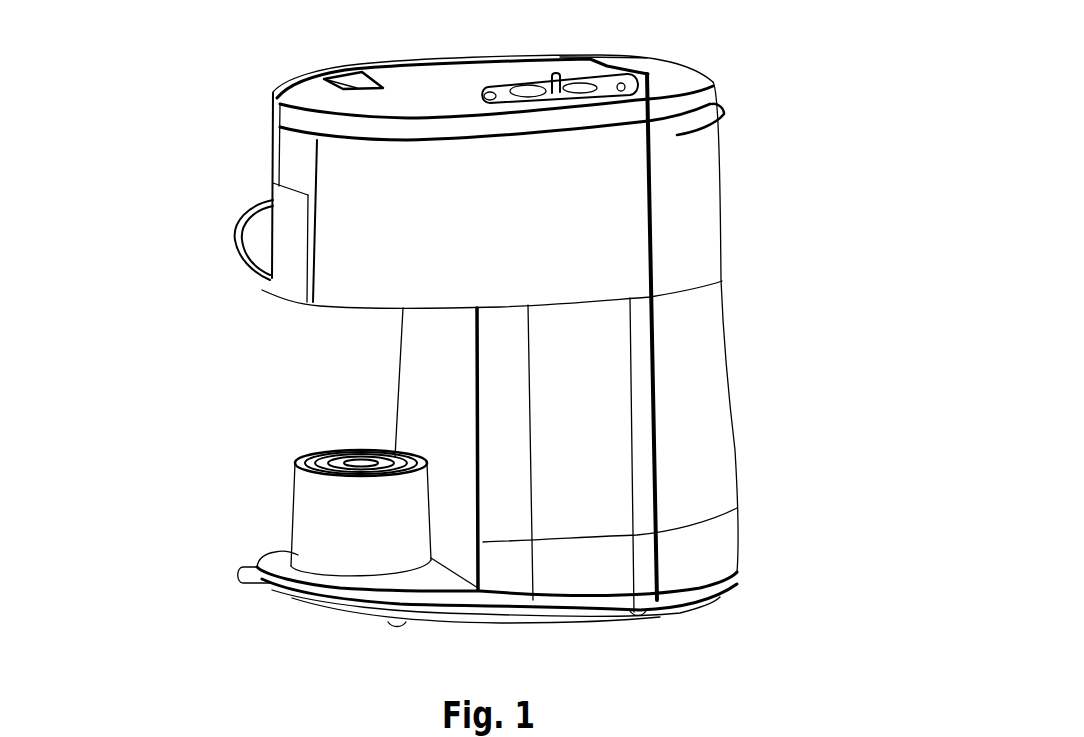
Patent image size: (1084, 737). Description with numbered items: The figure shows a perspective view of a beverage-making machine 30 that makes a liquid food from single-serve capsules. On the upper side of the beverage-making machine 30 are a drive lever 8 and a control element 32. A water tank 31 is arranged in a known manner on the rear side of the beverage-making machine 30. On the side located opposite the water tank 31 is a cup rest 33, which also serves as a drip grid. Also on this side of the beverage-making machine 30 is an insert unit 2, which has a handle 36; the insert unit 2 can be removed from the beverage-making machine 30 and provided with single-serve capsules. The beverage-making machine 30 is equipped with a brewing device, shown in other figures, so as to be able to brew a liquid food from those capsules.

The beverage-making machine 30 is at (246, 124).
The drive lever 8 is at (593, 58).
The control element 32 is at (552, 92).
The handle 36 is at (244, 240).
The insert unit 2 is at (282, 295).
The water tank 31 is at (703, 408).
The cup rest 33 is at (310, 520).